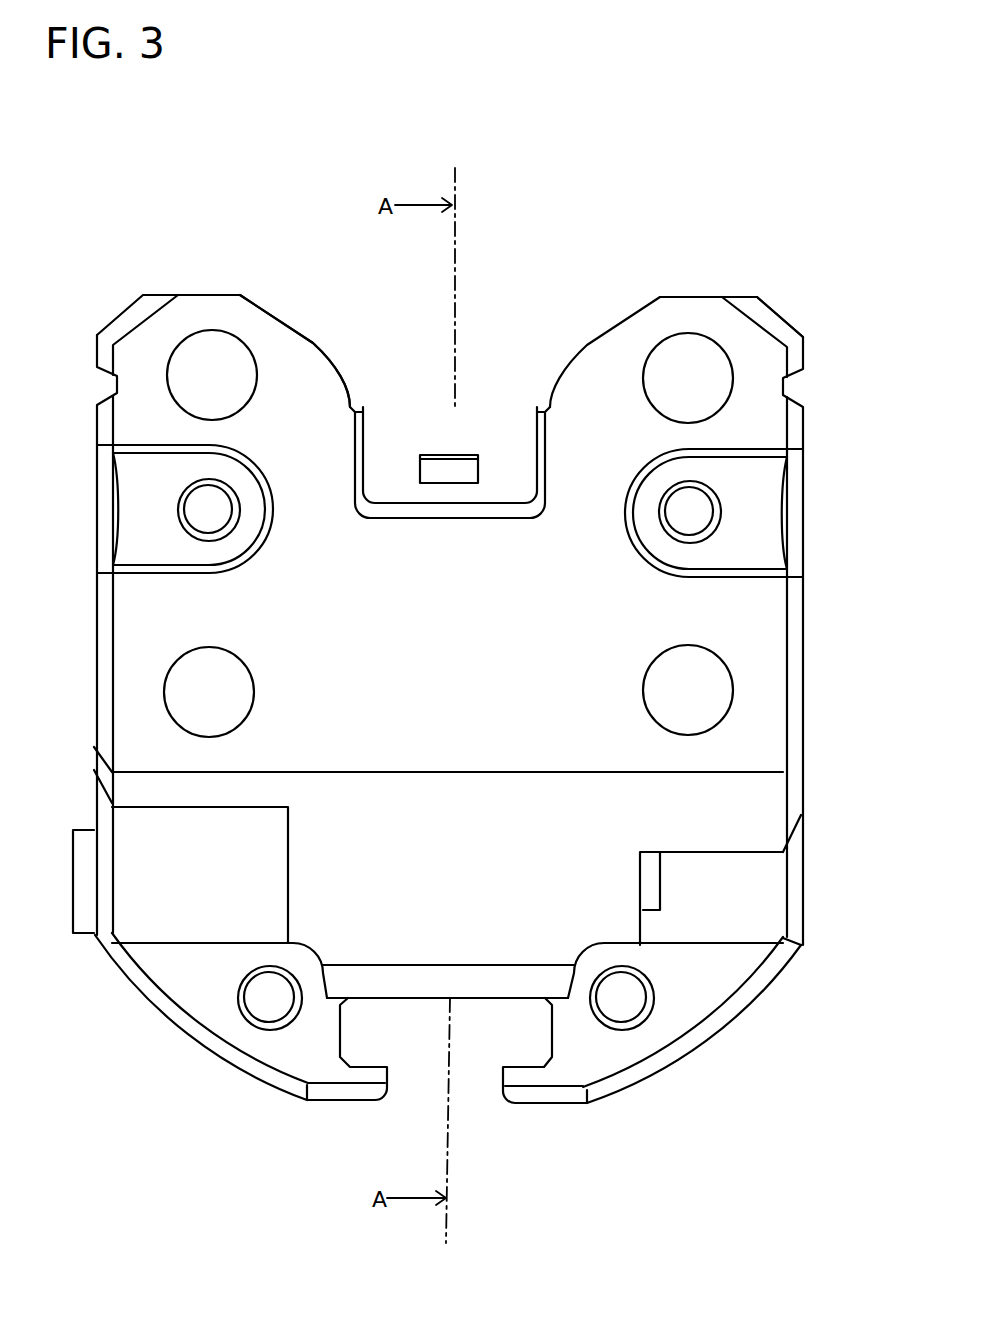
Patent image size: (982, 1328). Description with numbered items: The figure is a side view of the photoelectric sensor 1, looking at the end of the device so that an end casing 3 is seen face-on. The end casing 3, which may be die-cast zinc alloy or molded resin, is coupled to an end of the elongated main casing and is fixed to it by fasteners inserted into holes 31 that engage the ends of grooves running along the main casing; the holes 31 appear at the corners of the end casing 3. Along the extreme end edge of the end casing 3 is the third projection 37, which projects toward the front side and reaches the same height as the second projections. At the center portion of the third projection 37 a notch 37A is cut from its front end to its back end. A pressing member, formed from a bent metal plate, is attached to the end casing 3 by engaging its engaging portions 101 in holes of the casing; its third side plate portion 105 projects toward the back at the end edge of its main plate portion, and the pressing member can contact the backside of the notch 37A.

The photoelectric sensor 1 is at (662, 184).
The end casing 3 is at (743, 633).
The hole 31 is at (205, 504).
The third projection 37 is at (703, 297).
The notch 37A is at (318, 350).
The engaging portion 101 is at (448, 475).
The third side plate portion 105 is at (383, 483).